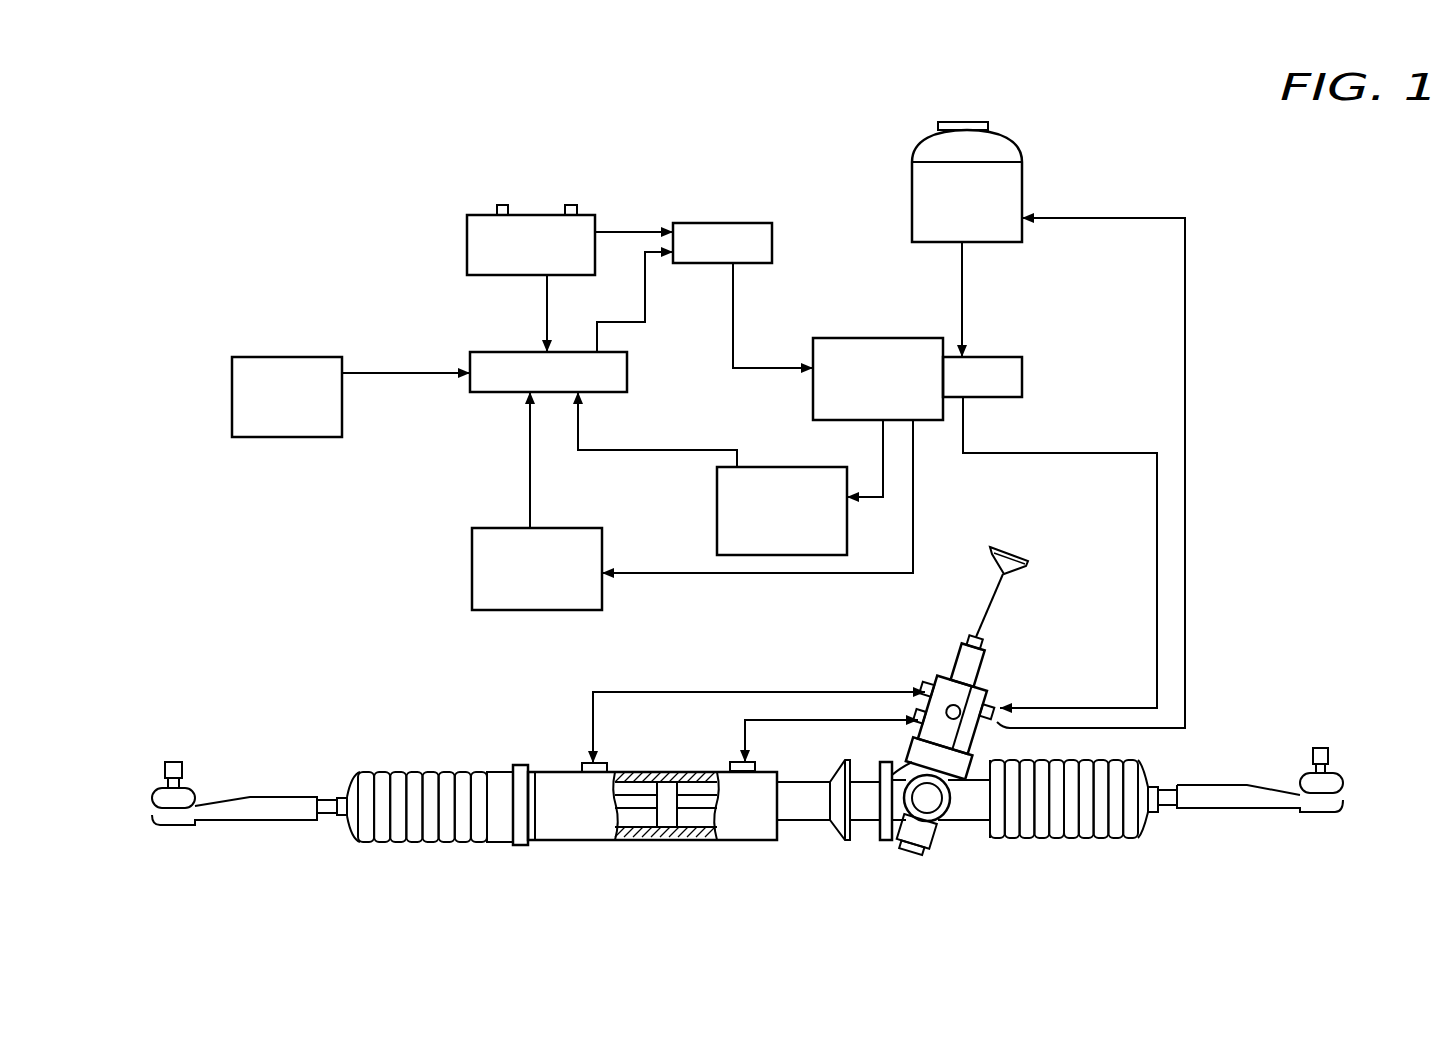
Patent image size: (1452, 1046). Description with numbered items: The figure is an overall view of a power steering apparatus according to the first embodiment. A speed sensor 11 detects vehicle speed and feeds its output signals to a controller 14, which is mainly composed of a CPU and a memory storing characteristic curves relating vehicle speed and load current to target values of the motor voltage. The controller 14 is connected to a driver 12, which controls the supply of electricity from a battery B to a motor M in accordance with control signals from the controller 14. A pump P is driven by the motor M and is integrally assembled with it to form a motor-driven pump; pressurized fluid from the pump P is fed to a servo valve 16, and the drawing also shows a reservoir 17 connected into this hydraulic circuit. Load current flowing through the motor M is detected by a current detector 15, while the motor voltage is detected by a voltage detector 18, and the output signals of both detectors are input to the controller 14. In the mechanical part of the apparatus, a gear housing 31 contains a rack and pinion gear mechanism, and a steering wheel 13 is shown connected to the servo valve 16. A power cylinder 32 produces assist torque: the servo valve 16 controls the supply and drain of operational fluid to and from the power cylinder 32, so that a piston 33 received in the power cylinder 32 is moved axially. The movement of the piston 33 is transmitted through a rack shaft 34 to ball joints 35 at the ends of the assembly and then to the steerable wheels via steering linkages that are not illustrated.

The speed sensor 11 is at (320, 357).
The battery B is at (587, 215).
The driver 12 is at (772, 240).
The controller 14 is at (627, 373).
The motor M is at (873, 338).
The pump P is at (1022, 370).
The reservoir tank 17 is at (1022, 162).
The current detector 15 is at (847, 530).
The voltage detector 18 is at (472, 568).
The steering wheel 13 is at (1027, 556).
The servo valve 16 is at (990, 676).
The gear housing 31 is at (942, 838).
The power cylinder 32 is at (571, 823).
The piston 33 is at (665, 815).
The rack shaft 34 is at (705, 805).
The ball joints 35 is at (263, 820).